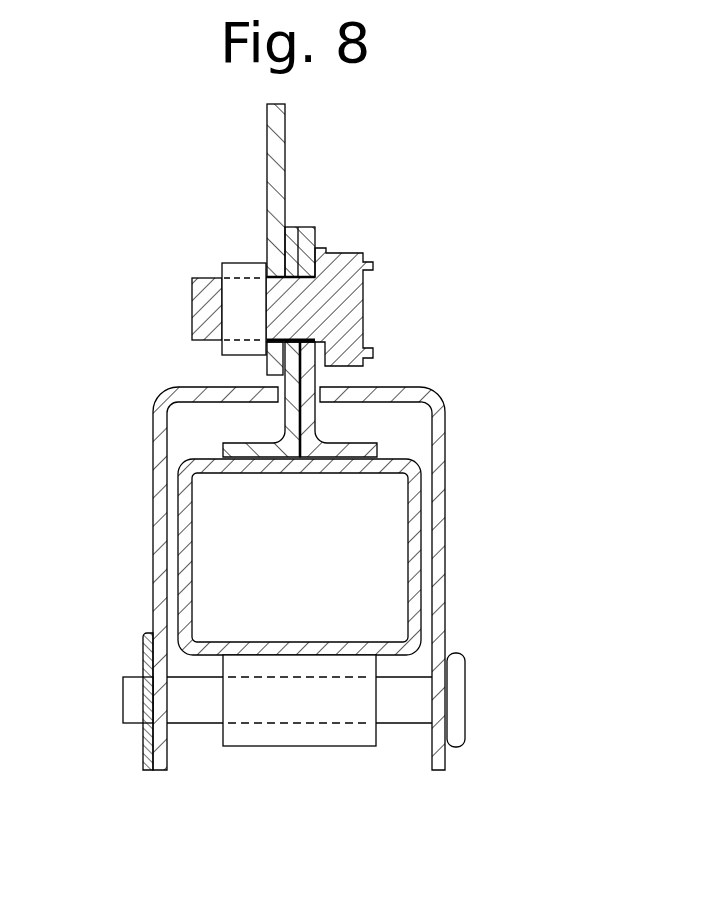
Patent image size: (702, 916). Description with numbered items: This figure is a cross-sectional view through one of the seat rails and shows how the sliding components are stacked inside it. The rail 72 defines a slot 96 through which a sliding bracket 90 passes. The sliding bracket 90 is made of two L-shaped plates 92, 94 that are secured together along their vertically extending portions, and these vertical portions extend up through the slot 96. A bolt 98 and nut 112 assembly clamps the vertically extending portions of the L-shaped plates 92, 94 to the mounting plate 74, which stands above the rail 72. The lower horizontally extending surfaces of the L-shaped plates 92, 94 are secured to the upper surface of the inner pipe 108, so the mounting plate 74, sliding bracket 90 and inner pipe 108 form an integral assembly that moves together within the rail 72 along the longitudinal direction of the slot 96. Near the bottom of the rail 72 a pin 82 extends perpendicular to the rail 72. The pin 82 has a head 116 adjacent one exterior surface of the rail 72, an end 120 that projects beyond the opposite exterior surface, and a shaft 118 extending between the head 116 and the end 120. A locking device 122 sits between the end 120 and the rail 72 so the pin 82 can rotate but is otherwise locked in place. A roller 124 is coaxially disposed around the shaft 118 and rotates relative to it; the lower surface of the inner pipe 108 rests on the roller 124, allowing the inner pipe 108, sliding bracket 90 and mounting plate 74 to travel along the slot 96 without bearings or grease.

The rail 72 is at (447, 463).
The mounting plate 74 is at (285, 130).
The pin 82 is at (504, 701).
The sliding bracket 90 is at (336, 215).
The L-shaped plate 92 is at (315, 226).
The L-shaped plate 94 is at (285, 226).
The slot 96 is at (318, 382).
The bolt 98 is at (372, 252).
The inner pipe 108 is at (417, 547).
The nut 112 is at (243, 263).
The head 116 is at (465, 682).
The shaft 118 is at (403, 718).
The end 120 is at (123, 705).
The locking device 122 is at (143, 653).
The roller 124 is at (300, 736).